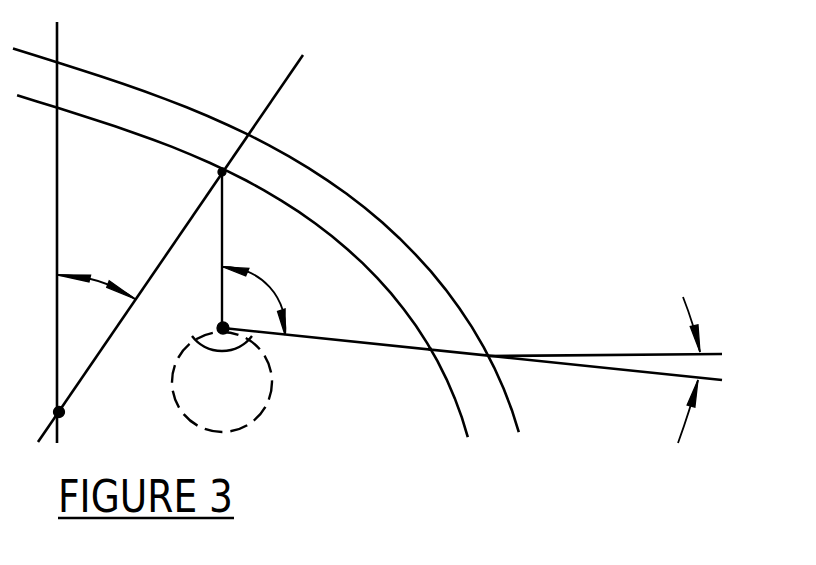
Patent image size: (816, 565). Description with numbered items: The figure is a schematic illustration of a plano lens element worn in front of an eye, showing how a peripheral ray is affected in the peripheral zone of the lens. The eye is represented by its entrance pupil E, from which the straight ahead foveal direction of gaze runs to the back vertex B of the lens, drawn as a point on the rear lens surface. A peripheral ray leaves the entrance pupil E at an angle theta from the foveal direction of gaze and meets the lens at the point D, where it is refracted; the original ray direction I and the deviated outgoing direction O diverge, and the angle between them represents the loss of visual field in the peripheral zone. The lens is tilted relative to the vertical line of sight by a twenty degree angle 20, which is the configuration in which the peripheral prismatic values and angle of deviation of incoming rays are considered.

The back vertex of the lens B is at (195, 244).
The entrance pupil of the eye E is at (222, 361).
The point D where ray intersects lens surface D is at (419, 371).
The object ray direction O is at (630, 325).
The image ray direction I is at (496, 395).
The 20 degree pantoscopic tilt angle 20 is at (96, 305).